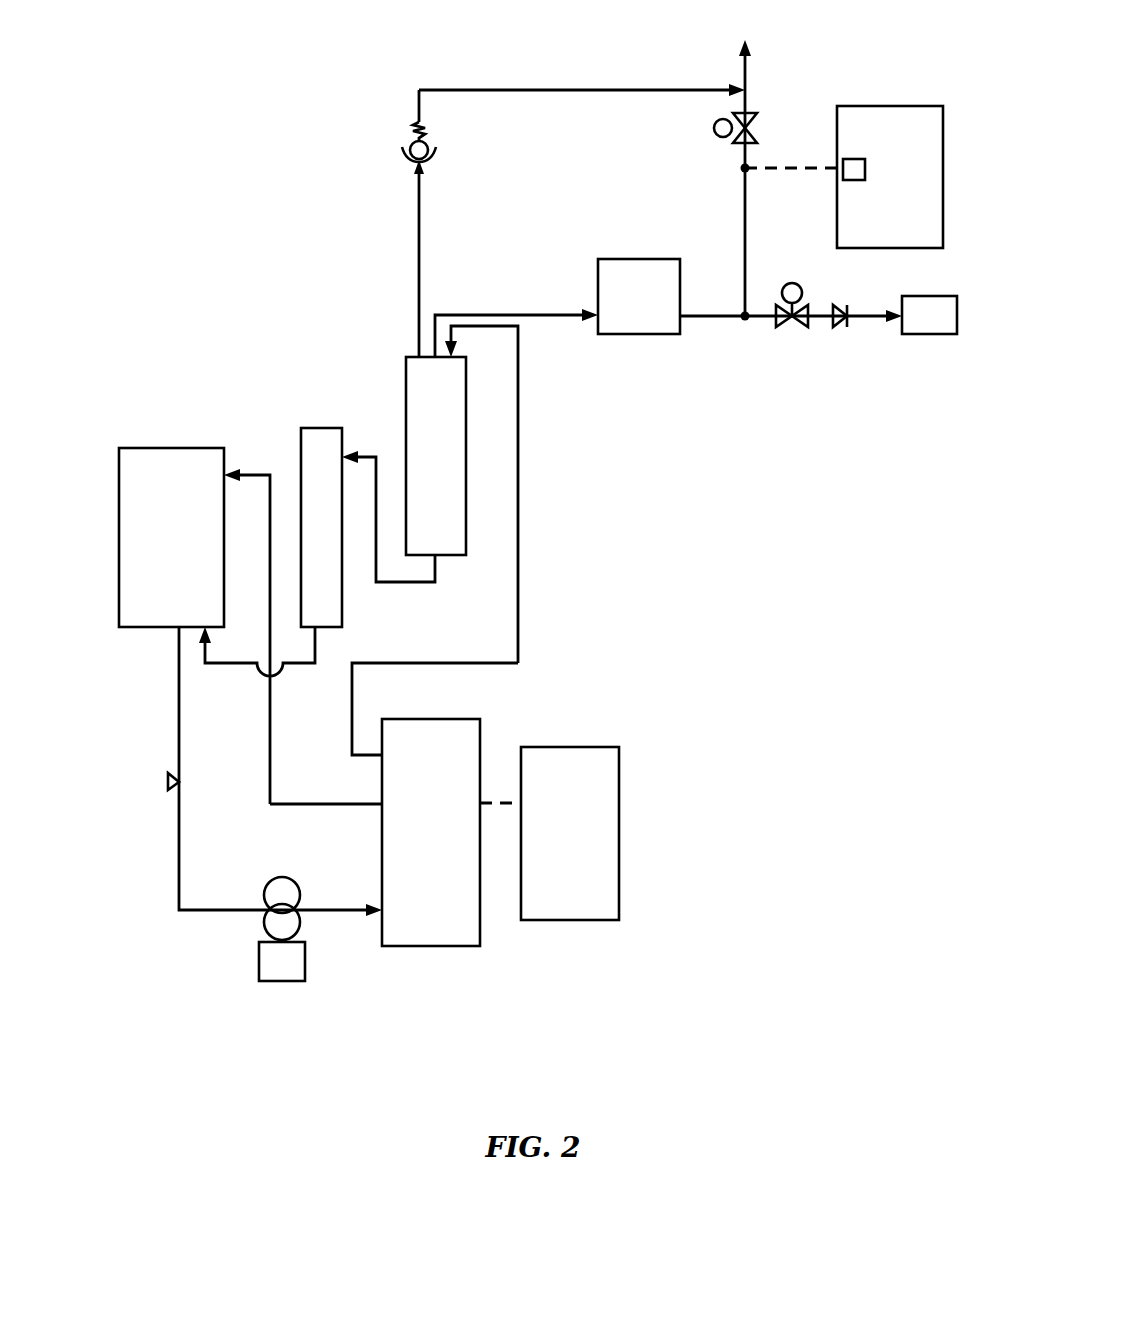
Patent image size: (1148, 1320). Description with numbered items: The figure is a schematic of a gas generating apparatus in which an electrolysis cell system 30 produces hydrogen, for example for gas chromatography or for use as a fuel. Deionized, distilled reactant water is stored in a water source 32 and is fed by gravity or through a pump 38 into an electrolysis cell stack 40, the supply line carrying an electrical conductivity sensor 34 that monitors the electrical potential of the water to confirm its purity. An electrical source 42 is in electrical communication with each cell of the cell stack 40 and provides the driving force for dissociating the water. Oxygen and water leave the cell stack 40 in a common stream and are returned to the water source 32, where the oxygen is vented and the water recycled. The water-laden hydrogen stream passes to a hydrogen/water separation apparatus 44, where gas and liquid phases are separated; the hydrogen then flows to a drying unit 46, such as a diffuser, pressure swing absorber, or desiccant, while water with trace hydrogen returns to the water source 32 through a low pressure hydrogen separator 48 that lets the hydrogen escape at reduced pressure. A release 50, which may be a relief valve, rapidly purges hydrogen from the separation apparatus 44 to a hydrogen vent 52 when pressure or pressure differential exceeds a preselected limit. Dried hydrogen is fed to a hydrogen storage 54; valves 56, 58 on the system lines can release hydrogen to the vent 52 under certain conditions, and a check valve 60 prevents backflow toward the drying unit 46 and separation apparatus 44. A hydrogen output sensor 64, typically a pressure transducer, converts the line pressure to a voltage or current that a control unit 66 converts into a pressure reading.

The electrolysis cell system 30 is at (195, 152).
The water source 32 is at (176, 448).
The electrical conductivity sensor 34 is at (125, 803).
The pump 38 is at (262, 922).
The electrolysis cell stack 40 is at (454, 946).
The electrical source 42 is at (619, 860).
The hydrogen/water separation apparatus 44 is at (478, 474).
The drying unit 46 is at (648, 334).
The low pressure hydrogen separator 48 is at (323, 428).
The release 50 is at (412, 160).
The hydrogen vent 52 is at (738, 52).
The hydrogen storage 54 is at (925, 334).
The valve 56 is at (778, 327).
The valve 58 is at (752, 113).
The check valve 60 is at (835, 327).
The hydrogen output sensor 64 is at (848, 173).
The control unit 66 is at (898, 106).